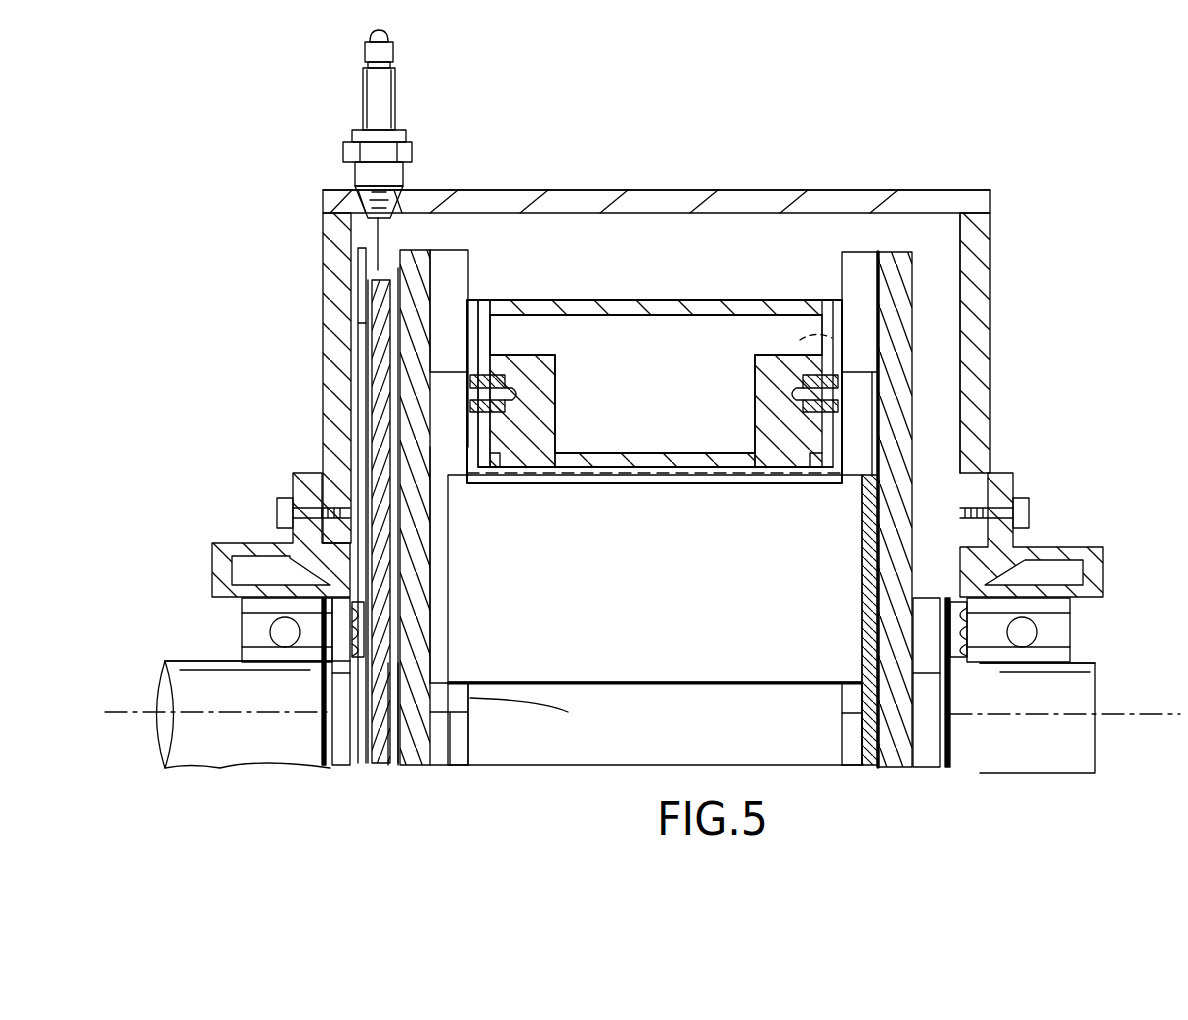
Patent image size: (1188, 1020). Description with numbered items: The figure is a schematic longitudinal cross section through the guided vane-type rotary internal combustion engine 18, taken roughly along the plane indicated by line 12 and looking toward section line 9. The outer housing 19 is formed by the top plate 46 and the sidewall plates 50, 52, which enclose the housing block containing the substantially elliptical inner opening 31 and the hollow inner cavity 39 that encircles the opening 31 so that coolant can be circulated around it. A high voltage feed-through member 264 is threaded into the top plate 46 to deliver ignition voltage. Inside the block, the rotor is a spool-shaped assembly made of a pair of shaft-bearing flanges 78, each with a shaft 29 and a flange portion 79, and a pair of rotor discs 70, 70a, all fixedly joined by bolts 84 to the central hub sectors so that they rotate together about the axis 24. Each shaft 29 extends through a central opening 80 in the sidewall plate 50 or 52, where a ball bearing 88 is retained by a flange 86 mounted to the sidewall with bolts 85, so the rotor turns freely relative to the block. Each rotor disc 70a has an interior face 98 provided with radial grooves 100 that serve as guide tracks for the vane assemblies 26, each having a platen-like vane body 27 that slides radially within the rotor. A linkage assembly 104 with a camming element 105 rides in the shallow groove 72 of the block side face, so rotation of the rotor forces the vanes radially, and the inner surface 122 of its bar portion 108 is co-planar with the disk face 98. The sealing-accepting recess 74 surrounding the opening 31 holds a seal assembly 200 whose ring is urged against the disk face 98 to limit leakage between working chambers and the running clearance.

The section line 12 is at (378, 12).
The internal combustion engine 18 is at (745, 108).
The outer housing 19 is at (990, 247).
The axis 24 is at (1138, 712).
The vane assembly 26 is at (700, 735).
The vane body 27 is at (653, 614).
The shaft 29 is at (205, 660).
The inner opening 31 is at (647, 473).
The hollow inner cavity 39 is at (618, 379).
The top plate 46 is at (908, 190).
The sidewall plate 50 is at (323, 278).
The sidewall plate 52 is at (990, 278).
The rotor disc 70 is at (913, 340).
The rotor disc 70a is at (455, 250).
The shallow groove 72 is at (470, 381).
The sealing-accepting recess 74 is at (805, 455).
The shaft-bearing flange 78 is at (447, 658).
The flange portion 79 is at (420, 585).
The central opening 80 is at (247, 545).
The bolt 84 is at (347, 654).
The bolt 85 is at (277, 507).
The flange 86 is at (293, 473).
The ball bearing 88 is at (242, 628).
The interior face 98 is at (578, 300).
The groove 100 is at (470, 297).
The linkage assembly 104 is at (455, 712).
The camming element 105 is at (762, 300).
The bar portion 108 is at (437, 655).
The inner surface 122 is at (470, 700).
The seal assembly 200 is at (500, 477).
The high voltage feed-through member 264 is at (343, 150).
The section line 9 is at (841, 504).